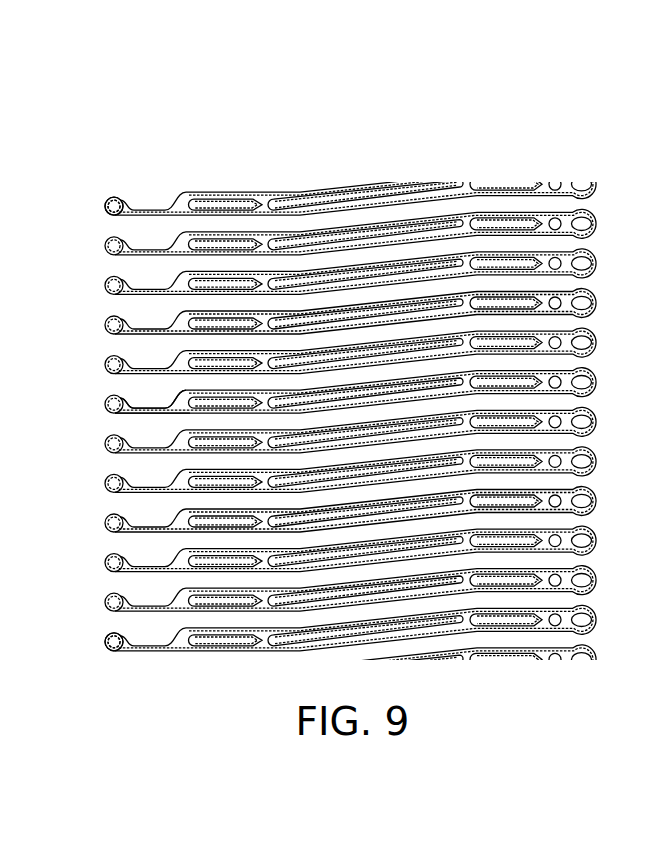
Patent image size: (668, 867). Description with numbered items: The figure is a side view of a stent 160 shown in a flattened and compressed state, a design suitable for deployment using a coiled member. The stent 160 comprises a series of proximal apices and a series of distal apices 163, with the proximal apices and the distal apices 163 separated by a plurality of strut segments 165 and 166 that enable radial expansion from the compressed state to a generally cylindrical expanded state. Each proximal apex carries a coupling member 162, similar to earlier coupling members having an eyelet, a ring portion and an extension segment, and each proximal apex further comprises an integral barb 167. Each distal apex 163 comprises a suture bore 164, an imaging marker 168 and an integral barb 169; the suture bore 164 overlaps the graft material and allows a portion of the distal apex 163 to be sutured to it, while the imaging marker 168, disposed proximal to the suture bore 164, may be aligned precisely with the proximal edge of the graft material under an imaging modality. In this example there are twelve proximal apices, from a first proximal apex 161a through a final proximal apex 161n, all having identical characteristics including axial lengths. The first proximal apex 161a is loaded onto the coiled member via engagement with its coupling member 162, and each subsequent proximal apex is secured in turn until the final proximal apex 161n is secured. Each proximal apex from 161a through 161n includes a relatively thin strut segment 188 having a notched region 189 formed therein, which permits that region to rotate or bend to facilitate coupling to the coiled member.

The stent 160 is at (348, 379).
The first proximal apex 161a is at (369, 178).
The final proximal apex 161n is at (149, 652).
The coupling member 162 is at (109, 199).
The distal apex 163 is at (596, 211).
The suture bore 164 is at (590, 227).
The strut segment 165 is at (327, 229).
The strut segment 166 is at (380, 211).
The integral barb 167 is at (237, 246).
The imaging marker 168 is at (554, 218).
The integral barb 169 is at (490, 226).
The thin strut segment 188 is at (141, 414).
The notched region 189 is at (147, 407).